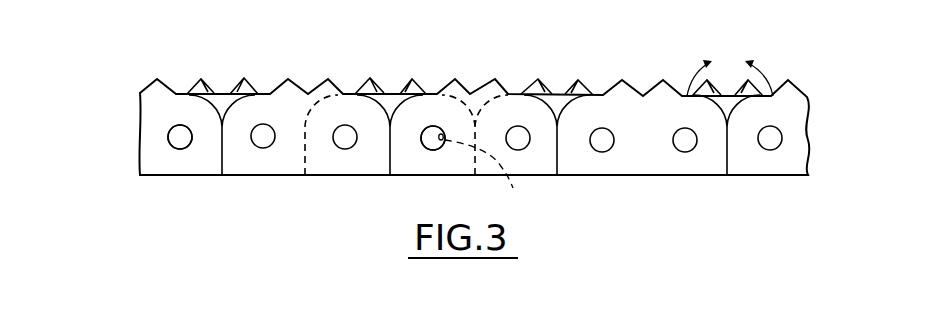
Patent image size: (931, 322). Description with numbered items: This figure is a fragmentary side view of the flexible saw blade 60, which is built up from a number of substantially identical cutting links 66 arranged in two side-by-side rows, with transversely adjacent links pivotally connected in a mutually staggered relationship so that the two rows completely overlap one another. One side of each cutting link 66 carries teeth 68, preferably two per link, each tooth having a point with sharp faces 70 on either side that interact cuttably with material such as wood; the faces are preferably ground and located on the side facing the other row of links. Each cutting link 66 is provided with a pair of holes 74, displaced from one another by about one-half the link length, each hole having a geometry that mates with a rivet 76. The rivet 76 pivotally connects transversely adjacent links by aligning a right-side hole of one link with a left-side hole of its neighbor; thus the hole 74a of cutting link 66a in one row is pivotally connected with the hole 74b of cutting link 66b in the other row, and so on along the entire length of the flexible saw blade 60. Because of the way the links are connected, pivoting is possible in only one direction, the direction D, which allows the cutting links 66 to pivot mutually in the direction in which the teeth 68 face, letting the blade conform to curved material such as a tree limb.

The flexible saw blade 60 is at (151, 72).
The cutting link 66 is at (240, 194).
The cutting link of one row 66a is at (425, 92).
The cutting link of the other row 66b is at (498, 93).
The teeth 68 is at (240, 77).
The sharp faces 70 is at (247, 78).
The holes 74 is at (171, 135).
The hole of cutting link 66a 74a is at (440, 151).
The hole of cutting link 66b 74b is at (506, 173).
The rivet 76 is at (179, 148).
The direction of pivoting D is at (730, 67).